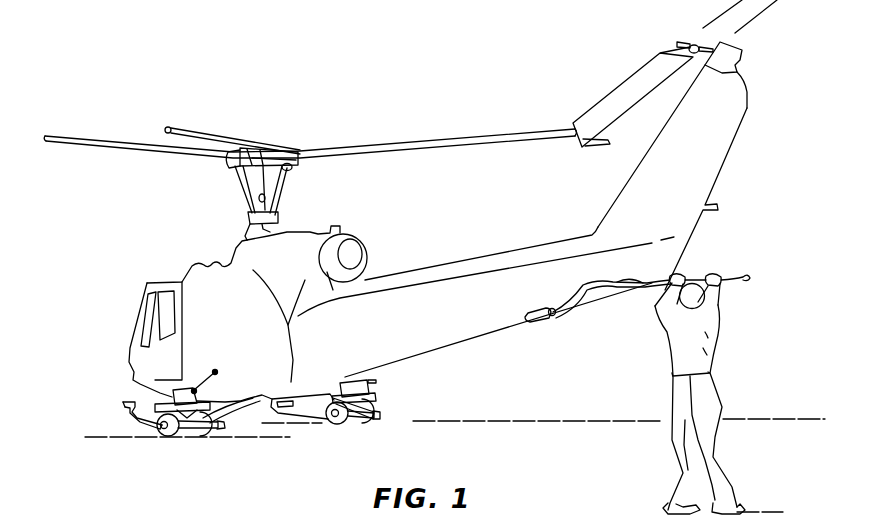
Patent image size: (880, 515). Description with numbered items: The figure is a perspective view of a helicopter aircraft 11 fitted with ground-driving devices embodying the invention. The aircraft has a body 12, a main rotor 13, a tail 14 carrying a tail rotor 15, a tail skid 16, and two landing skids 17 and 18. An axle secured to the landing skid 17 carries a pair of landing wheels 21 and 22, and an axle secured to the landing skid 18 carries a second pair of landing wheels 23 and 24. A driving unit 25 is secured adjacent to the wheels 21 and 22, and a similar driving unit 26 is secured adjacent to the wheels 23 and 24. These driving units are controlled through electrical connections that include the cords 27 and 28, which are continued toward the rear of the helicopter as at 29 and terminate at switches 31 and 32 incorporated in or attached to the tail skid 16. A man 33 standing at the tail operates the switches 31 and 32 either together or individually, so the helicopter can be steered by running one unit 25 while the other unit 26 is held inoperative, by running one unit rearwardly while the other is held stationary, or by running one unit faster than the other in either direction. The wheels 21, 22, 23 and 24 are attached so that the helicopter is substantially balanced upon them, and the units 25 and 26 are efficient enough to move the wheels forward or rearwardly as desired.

The helicopter aircraft 11 is at (488, 330).
The body 12 is at (431, 338).
The rotor 13 is at (402, 144).
The tail 14 is at (722, 134).
The tail rotor 15 is at (778, 0).
The tail skid 16 is at (745, 273).
The landing skid 17 is at (143, 437).
The landing skid 18 is at (311, 415).
The landing wheel 21 is at (176, 440).
The landing wheel 22 is at (219, 440).
The landing wheel 23 is at (332, 424).
The landing wheel 24 is at (368, 427).
The driving unit 25 is at (176, 386).
The driving unit 26 is at (377, 381).
The cord 27 is at (195, 391).
The cord 28 is at (349, 382).
The electrical connections continued to the rear 29 is at (586, 284).
The switch 31 is at (716, 255).
The switch 32 is at (692, 278).
The man 33 is at (707, 358).